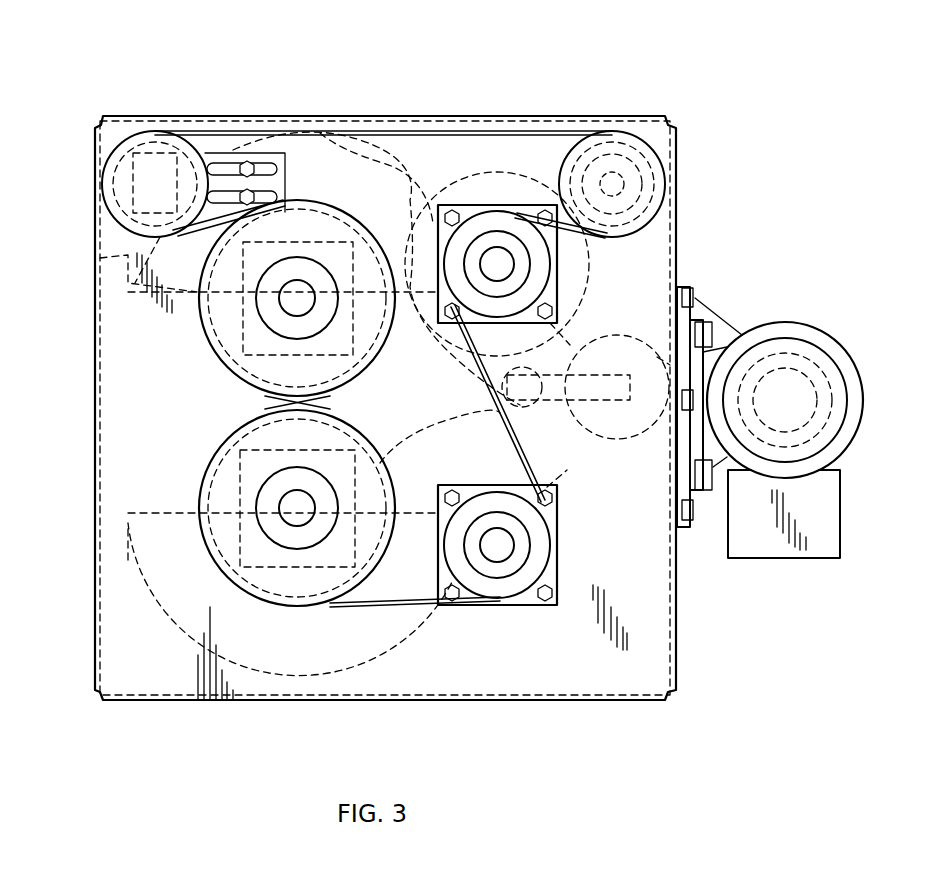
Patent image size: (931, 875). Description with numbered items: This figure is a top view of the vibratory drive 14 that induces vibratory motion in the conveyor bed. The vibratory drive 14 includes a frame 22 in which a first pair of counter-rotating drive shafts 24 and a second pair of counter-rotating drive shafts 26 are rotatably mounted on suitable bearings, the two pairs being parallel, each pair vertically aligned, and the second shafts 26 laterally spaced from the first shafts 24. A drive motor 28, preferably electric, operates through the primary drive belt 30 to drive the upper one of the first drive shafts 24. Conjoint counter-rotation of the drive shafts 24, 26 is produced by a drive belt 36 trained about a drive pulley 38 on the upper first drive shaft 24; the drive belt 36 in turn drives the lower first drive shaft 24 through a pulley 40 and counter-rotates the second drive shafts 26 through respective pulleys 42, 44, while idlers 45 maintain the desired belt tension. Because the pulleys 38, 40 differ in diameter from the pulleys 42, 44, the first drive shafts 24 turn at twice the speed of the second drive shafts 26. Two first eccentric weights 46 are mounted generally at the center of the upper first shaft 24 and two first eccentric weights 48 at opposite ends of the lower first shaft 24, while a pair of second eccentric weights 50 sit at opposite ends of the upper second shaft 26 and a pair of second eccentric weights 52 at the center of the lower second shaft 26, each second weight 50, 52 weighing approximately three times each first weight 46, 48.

The vibratory drive 14 is at (660, 66).
The frame 22 is at (95, 368).
The first pair of counter-rotating drive shafts 24 is at (505, 265).
The second pair of counter-rotating drive shafts 26 is at (303, 313).
The drive motor 28 is at (785, 325).
The primary drive belt 30 is at (700, 297).
The drive belt 36 is at (507, 436).
The drive pulley 38 is at (497, 213).
The pulley 40 is at (500, 612).
The pulley 42 is at (220, 343).
The pulley 44 is at (222, 548).
The idlers 45 is at (102, 178).
The first eccentric weights 46 is at (432, 394).
The first eccentric weights 48 is at (560, 473).
The second eccentric weights 50 is at (100, 262).
The second eccentric weights 52 is at (128, 560).